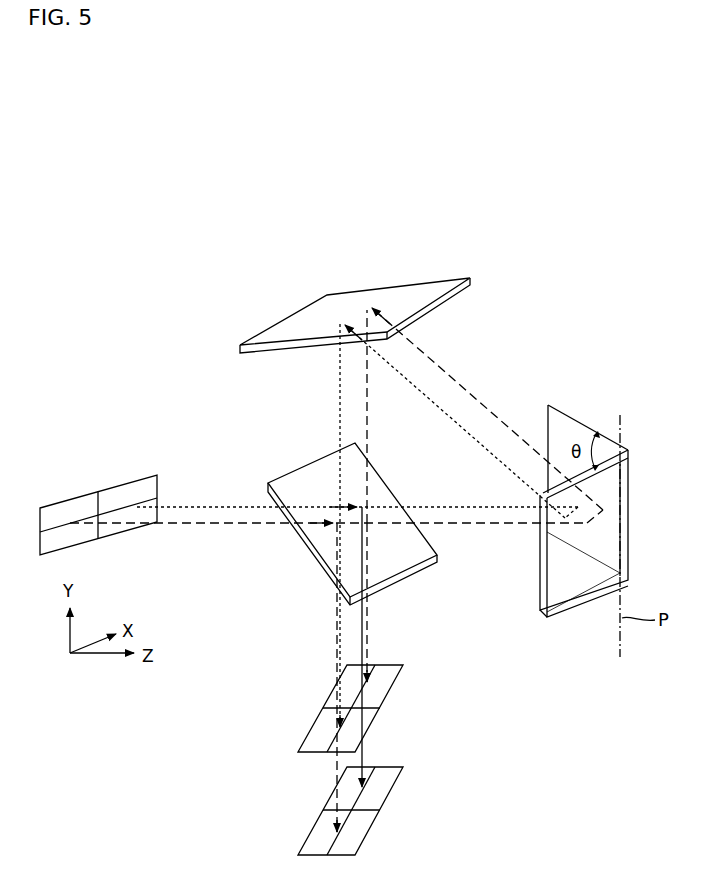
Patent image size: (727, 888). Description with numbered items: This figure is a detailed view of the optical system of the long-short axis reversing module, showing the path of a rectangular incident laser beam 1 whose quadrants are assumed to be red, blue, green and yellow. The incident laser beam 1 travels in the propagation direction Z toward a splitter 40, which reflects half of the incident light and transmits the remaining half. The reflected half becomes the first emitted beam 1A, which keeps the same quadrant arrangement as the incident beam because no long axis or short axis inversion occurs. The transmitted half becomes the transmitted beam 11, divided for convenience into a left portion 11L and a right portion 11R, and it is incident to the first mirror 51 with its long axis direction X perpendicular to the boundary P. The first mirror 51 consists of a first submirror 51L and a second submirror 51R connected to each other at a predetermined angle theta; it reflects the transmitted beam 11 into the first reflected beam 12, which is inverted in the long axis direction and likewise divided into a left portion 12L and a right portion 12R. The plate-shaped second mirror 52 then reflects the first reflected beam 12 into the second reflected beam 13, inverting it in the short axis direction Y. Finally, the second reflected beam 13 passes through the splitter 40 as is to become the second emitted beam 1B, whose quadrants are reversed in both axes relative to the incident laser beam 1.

The incident laser beam 1 is at (78, 497).
The first emitted beam 1A is at (298, 853).
The second emitted beam 1B is at (298, 753).
The transmitted beam 11 is at (336, 584).
The right portion of transmitted beam 11R is at (458, 524).
The left portion of transmitted beam 11L is at (498, 508).
The first reflected beam 12 is at (474, 356).
The right portion of first reflected beam 12R is at (445, 375).
The left portion of first reflected beam 12L is at (478, 437).
The second reflected beam 13 is at (366, 379).
The splitter 40 is at (320, 567).
The first mirror 51 is at (615, 467).
The first submirror 51L is at (596, 428).
The second submirror 51R is at (630, 452).
The second mirror 52 is at (410, 287).